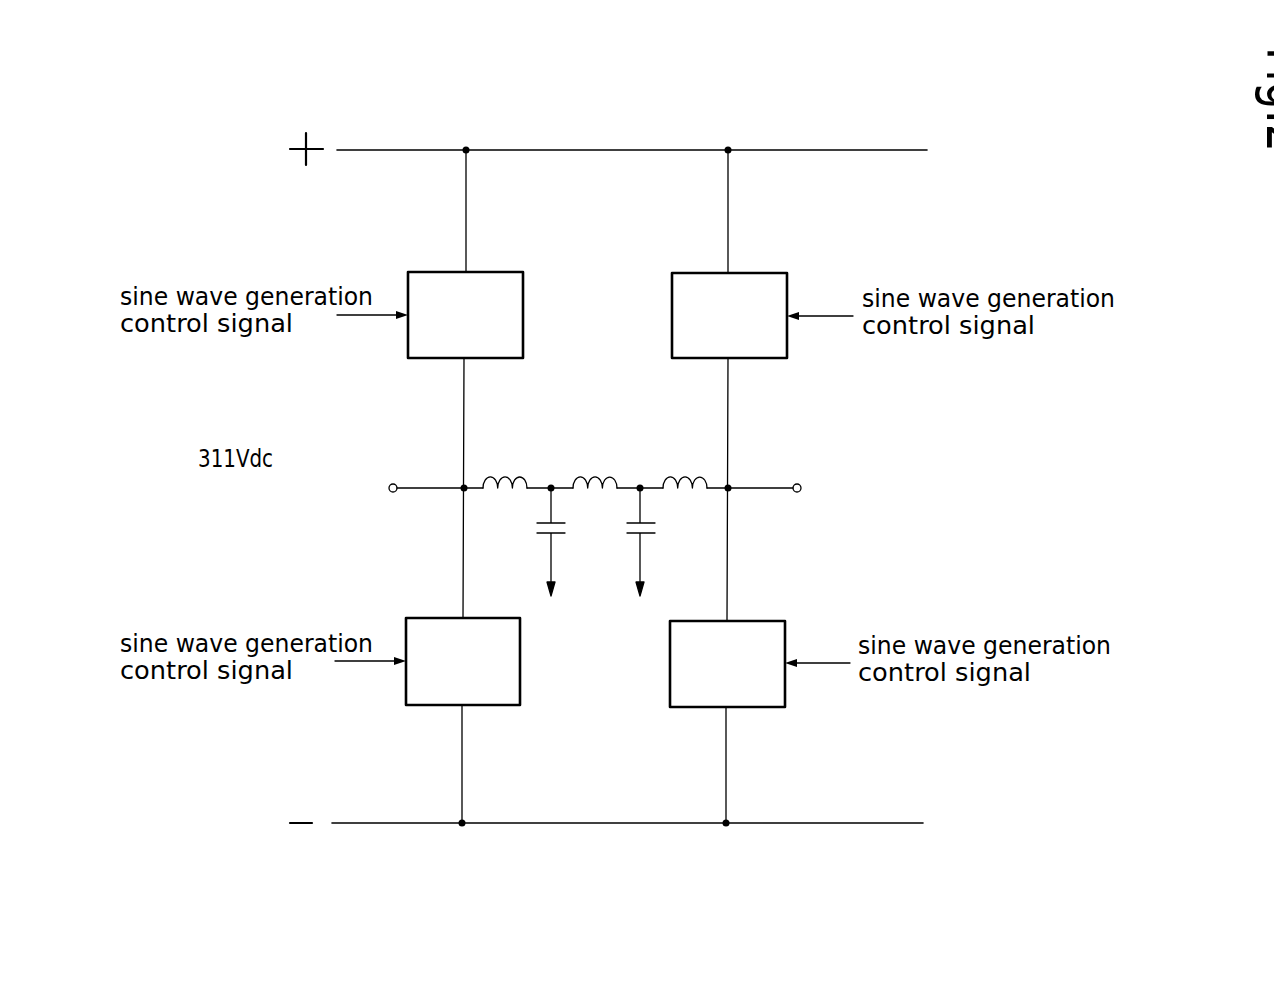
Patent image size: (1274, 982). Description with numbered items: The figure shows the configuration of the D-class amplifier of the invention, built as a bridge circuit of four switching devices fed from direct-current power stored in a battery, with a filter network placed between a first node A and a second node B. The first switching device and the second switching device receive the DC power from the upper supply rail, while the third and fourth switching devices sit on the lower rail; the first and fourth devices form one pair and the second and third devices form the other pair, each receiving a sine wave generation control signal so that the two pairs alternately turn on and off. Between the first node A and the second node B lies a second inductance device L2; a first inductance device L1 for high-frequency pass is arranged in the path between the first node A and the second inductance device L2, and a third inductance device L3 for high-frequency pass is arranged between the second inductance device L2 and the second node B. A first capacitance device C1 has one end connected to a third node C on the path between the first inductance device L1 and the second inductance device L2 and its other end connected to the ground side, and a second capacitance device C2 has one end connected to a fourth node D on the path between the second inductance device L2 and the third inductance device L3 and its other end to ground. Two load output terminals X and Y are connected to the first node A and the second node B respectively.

The first inductance device L1 is at (505, 465).
The second inductance device L2 is at (595, 465).
The third inductance device L3 is at (685, 465).
The first capacitance device C1 is at (537, 542).
The second capacitance device C2 is at (626, 542).
The first node A is at (464, 488).
The second node B is at (728, 488).
The third node C is at (551, 488).
The fourth node D is at (640, 488).
The load output terminal X is at (382, 489).
The load output terminal Y is at (807, 489).